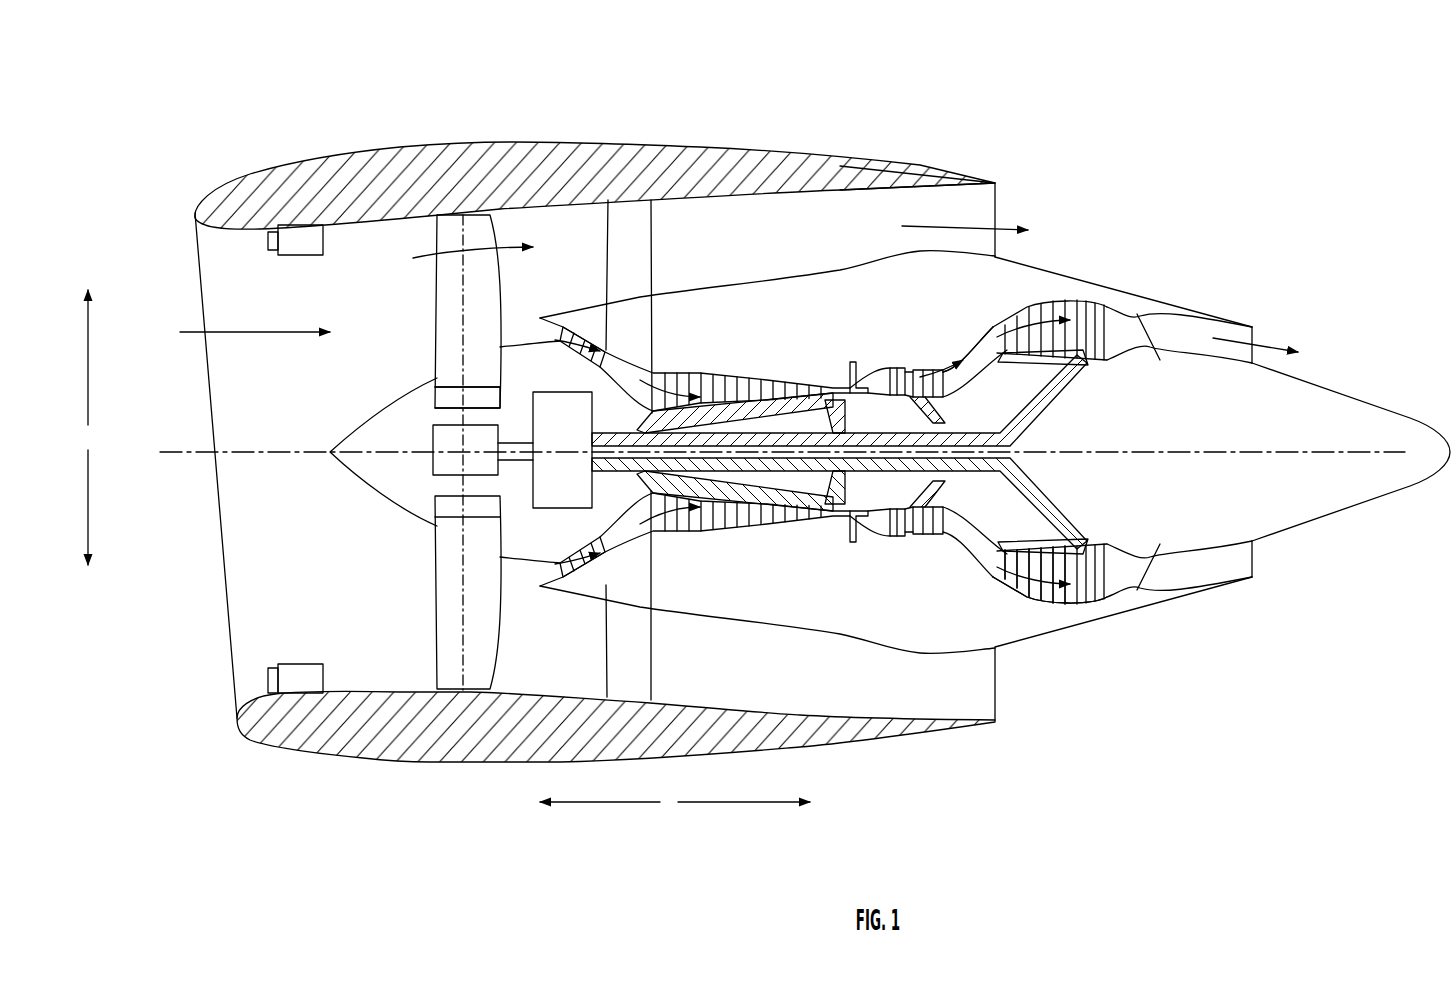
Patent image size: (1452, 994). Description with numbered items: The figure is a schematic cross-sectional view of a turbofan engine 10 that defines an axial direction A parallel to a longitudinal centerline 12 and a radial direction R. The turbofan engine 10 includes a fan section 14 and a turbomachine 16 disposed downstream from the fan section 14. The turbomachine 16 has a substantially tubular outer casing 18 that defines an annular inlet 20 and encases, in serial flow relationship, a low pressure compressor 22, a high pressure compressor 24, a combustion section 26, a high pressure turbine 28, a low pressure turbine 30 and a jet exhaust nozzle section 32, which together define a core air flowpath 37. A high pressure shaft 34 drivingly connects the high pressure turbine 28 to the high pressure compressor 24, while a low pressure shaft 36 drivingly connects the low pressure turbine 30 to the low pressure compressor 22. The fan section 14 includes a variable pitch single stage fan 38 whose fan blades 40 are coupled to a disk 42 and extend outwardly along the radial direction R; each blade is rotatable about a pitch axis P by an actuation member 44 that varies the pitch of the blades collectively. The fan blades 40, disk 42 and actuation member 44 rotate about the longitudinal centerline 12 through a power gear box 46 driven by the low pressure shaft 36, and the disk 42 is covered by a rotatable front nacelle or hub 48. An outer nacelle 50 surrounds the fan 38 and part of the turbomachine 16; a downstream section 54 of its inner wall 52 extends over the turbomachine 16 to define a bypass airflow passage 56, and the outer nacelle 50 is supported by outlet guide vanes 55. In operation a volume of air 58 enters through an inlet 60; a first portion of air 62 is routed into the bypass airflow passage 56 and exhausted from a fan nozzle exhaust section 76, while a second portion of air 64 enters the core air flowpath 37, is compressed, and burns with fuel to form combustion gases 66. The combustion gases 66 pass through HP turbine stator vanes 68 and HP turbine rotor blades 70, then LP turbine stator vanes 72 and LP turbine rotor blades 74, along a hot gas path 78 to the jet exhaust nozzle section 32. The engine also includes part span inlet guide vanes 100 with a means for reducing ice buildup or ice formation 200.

The turbofan engine 10 is at (765, 425).
The longitudinal centerline 12 is at (1195, 450).
The fan section 14 is at (585, 425).
The turbomachine 16 is at (975, 443).
The outer casing 18 is at (833, 637).
The annular inlet 20 is at (553, 570).
The low pressure compressor 22 is at (605, 540).
The high pressure compressor 24 is at (690, 523).
The combustion section 26 is at (863, 526).
The high pressure turbine 28 is at (950, 528).
The low pressure turbine 30 is at (1080, 590).
The jet exhaust nozzle section 32 is at (1160, 577).
The high pressure shaft 34 is at (875, 425).
The low pressure shaft 36 is at (950, 438).
The core air flowpath 37 is at (977, 550).
The fan 38 is at (373, 495).
The fan blades 40 is at (433, 602).
The disk 42 is at (440, 396).
The actuation member 44 is at (433, 440).
The power gear box 46 is at (595, 405).
The front nacelle or hub 48 is at (343, 463).
The outer nacelle 50 is at (470, 762).
The inner wall 52 is at (347, 222).
The downstream section 54 is at (935, 168).
The outlet guide vanes 55 is at (653, 215).
The bypass airflow passage 56 is at (820, 243).
The volume of air 58 is at (248, 332).
The inlet 60 is at (230, 690).
The first portion of air 62 is at (447, 255).
The second portion of air 64 is at (523, 328).
The combustion gases 66 is at (933, 372).
The HP turbine stator vanes 68 is at (903, 538).
The HP turbine rotor blades 70 is at (920, 536).
The LP turbine stator vanes 72 is at (1003, 572).
The LP turbine rotor blades 74 is at (1017, 580).
The fan nozzle exhaust section 76 is at (985, 204).
The hot gas path 78 is at (979, 339).
The part span inlet guide vanes 100 is at (300, 235).
The means for reducing ice buildup or ice formation 200 is at (273, 250).
The pitch axis P is at (490, 216).
The radial direction R is at (88, 427).
The axial direction A is at (675, 802).